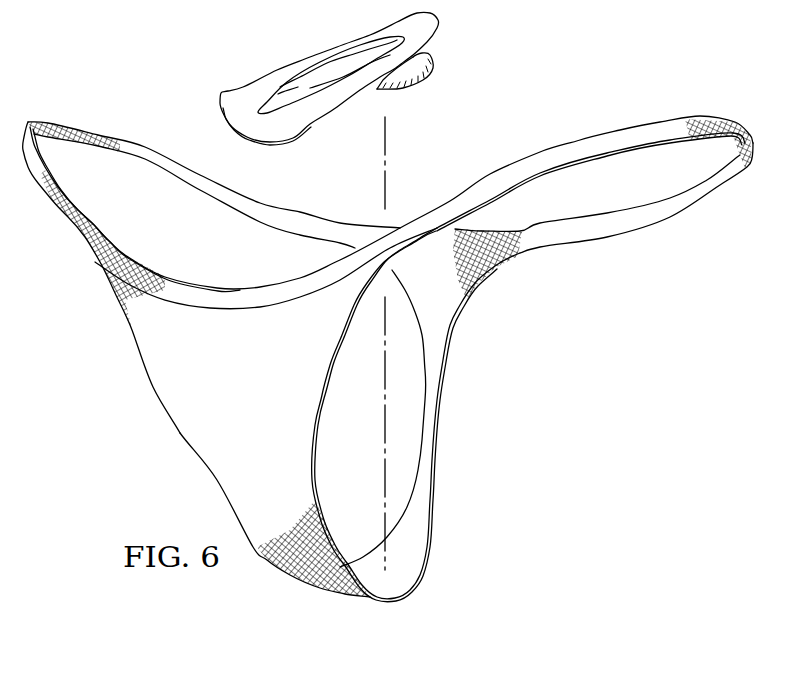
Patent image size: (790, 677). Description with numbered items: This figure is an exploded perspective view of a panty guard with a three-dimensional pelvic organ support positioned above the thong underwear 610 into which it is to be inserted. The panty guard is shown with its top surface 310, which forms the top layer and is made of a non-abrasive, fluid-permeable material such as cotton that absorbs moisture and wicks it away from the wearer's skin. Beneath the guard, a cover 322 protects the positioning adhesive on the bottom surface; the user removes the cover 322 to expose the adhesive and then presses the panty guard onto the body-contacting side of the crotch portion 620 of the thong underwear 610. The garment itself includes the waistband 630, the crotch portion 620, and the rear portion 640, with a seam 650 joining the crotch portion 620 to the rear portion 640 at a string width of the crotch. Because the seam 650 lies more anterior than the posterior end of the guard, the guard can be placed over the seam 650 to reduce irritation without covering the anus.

The top surface 310 is at (247, 93).
The cover 322 is at (434, 66).
The waistband 630 is at (55, 118).
The thong underwear 610 is at (153, 387).
The crotch portion 620 is at (217, 480).
The rear portion 640 is at (437, 412).
The seam 650 is at (403, 520).